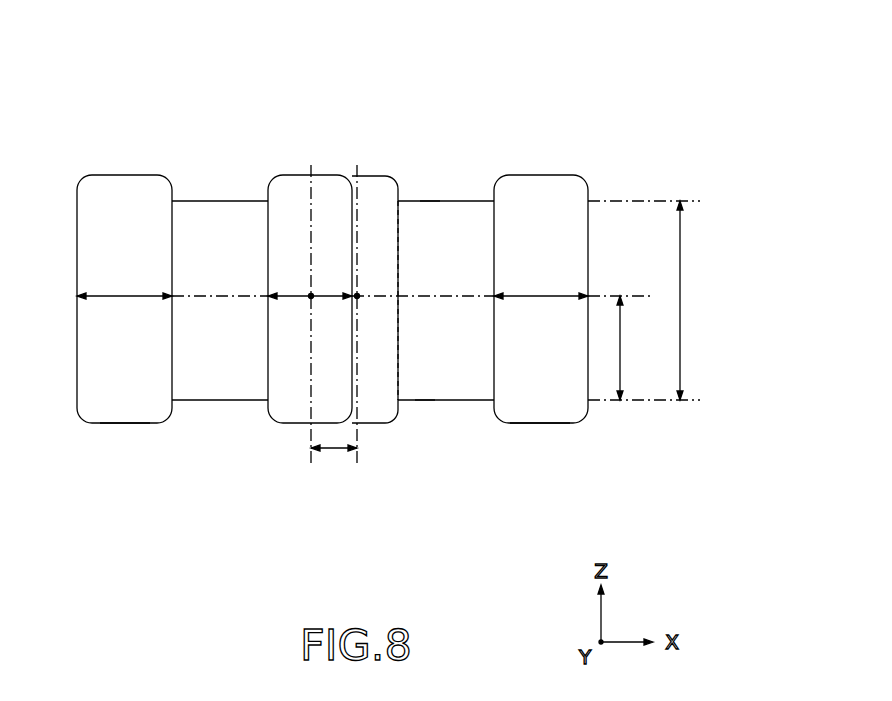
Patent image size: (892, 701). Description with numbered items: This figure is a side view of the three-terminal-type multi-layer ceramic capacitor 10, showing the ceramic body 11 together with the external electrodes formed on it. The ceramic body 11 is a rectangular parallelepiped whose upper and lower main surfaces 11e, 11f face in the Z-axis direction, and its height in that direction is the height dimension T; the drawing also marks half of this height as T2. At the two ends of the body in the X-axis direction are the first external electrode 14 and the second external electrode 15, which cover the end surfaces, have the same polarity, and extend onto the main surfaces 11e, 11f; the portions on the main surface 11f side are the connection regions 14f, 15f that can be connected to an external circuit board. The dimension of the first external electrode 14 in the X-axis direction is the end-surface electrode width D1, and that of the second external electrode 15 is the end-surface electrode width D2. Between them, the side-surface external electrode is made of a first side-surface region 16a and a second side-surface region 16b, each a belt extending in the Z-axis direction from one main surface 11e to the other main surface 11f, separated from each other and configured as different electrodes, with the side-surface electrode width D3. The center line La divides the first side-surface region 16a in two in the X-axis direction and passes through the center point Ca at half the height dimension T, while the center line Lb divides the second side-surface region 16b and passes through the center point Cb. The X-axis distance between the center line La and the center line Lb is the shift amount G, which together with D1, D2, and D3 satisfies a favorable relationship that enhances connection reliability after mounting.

The multi-layer ceramic capacitor 10 is at (108, 83).
The ceramic body 11 is at (238, 190).
The main surface 11e is at (429, 200).
The main surface 11f is at (423, 403).
The first external electrode 14 is at (78, 191).
The connection region 14f is at (130, 427).
The second external electrode 15 is at (586, 192).
The connection region 15f is at (535, 426).
The first side-surface region 16a is at (372, 184).
The second side-surface region 16b is at (285, 426).
The end-surface electrode width D1 is at (124, 312).
The end-surface electrode width D2 is at (541, 312).
The side-surface electrode width D3 is at (310, 312).
The height dimension T is at (696, 300).
The half thickness of rod T2 is at (640, 348).
The shift amount G is at (334, 465).
The center line La is at (357, 191).
The center line Lb is at (310, 192).
The center point Ca is at (358, 294).
The center point Cb is at (310, 294).